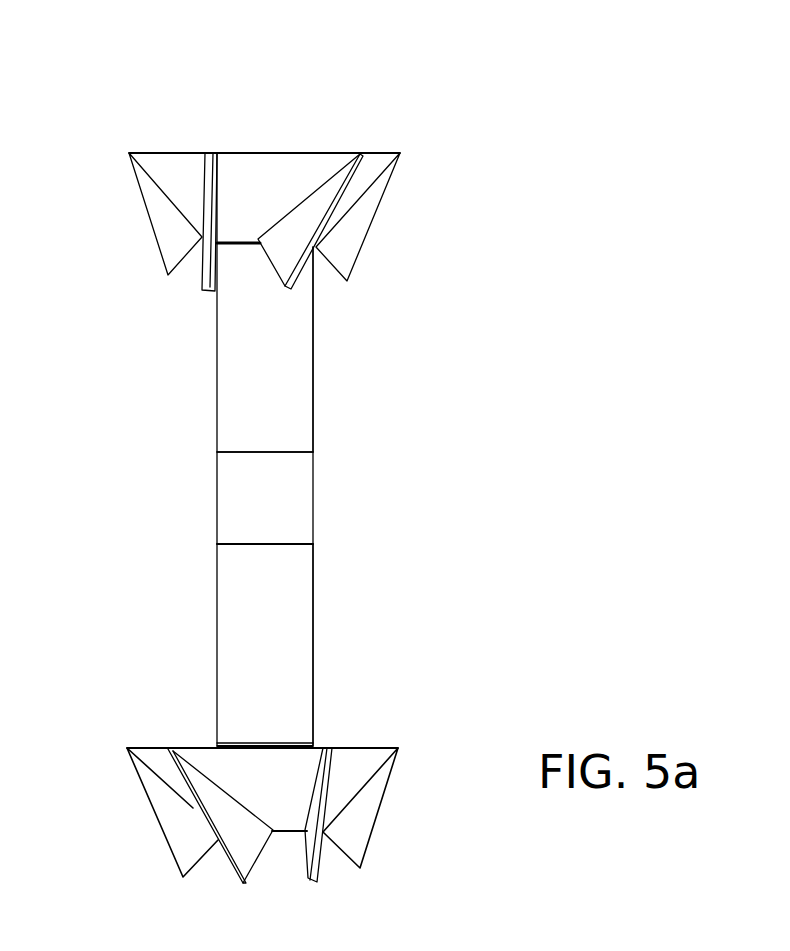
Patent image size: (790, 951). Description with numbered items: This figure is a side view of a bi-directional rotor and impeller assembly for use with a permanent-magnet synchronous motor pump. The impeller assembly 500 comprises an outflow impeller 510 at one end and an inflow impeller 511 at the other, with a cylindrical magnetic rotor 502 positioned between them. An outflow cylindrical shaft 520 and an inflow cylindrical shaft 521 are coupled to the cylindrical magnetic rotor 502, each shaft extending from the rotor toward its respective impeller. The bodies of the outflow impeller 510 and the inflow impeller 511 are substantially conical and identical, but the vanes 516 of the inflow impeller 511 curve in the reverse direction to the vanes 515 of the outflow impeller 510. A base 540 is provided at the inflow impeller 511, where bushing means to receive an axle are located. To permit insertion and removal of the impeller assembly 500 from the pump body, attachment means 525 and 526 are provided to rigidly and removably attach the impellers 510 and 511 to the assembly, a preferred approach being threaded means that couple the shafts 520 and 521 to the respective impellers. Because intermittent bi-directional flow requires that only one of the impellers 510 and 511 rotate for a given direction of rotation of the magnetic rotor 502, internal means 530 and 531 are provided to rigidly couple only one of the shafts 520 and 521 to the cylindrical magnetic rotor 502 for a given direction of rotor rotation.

The impeller assembly 500 is at (453, 320).
The cylindrical magnetic rotor 502 is at (290, 517).
The outflow impeller 510 is at (302, 170).
The inflow impeller 511 is at (352, 760).
The vanes 515 is at (365, 212).
The vanes 516 is at (168, 805).
The outflow cylindrical shaft 520 is at (297, 393).
The inflow cylindrical shaft 521 is at (290, 653).
The attachment means 525 is at (237, 242).
The attachment means 526 is at (292, 738).
The internal means 530 is at (247, 362).
The internal means 531 is at (247, 610).
The base 540 is at (275, 832).